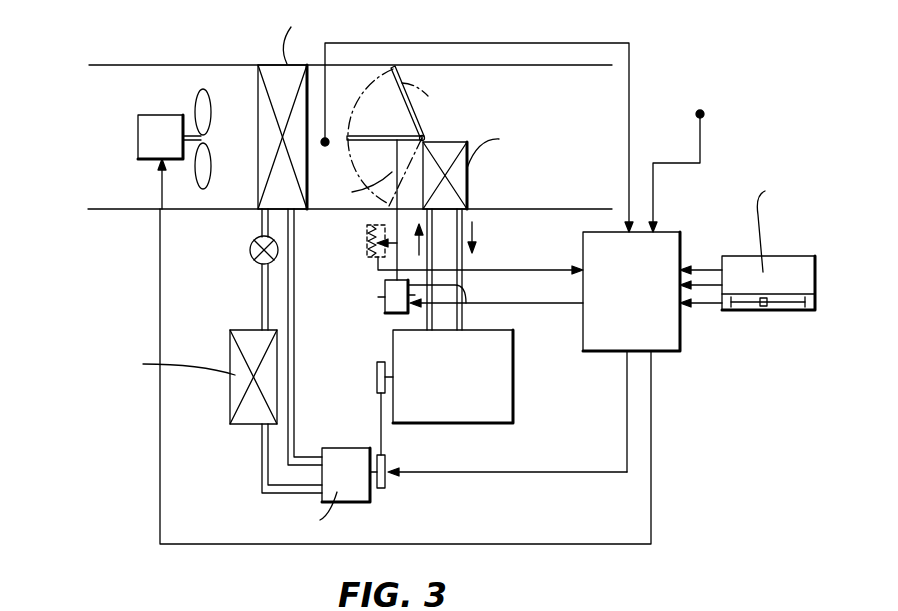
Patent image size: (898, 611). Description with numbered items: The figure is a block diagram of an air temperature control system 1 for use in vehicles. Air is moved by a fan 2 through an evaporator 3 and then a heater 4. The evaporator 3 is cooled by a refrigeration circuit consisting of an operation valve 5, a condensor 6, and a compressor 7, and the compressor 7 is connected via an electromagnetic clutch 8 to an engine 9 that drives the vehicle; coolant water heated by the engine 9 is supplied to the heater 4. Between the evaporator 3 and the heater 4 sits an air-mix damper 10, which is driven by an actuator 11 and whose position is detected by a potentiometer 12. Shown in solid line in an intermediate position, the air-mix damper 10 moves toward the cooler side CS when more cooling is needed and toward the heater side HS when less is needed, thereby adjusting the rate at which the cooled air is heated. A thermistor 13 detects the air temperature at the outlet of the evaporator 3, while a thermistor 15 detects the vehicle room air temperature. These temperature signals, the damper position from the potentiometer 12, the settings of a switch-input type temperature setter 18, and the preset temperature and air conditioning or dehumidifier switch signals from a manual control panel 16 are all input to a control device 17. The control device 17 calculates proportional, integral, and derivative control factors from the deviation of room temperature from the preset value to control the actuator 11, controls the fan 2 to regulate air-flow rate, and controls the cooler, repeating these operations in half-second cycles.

The air temperature control system 1 is at (153, 64).
The fan 2 is at (146, 136).
The evaporator 3 is at (268, 64).
The heater 4 is at (446, 148).
The operation valve 5 is at (249, 246).
The condensor 6 is at (231, 408).
The compressor 7 is at (357, 503).
The electromagnetic clutch 8 is at (385, 490).
The engine 9 is at (467, 424).
The air-mix damper 10 is at (390, 146).
The actuator 11 is at (385, 305).
The potentiometer 12 is at (368, 250).
The thermistor 13 is at (328, 146).
The thermistor 15 is at (705, 116).
The manual control panel 16 is at (733, 256).
The control device 17 is at (683, 230).
The temperature setter 18 is at (745, 305).